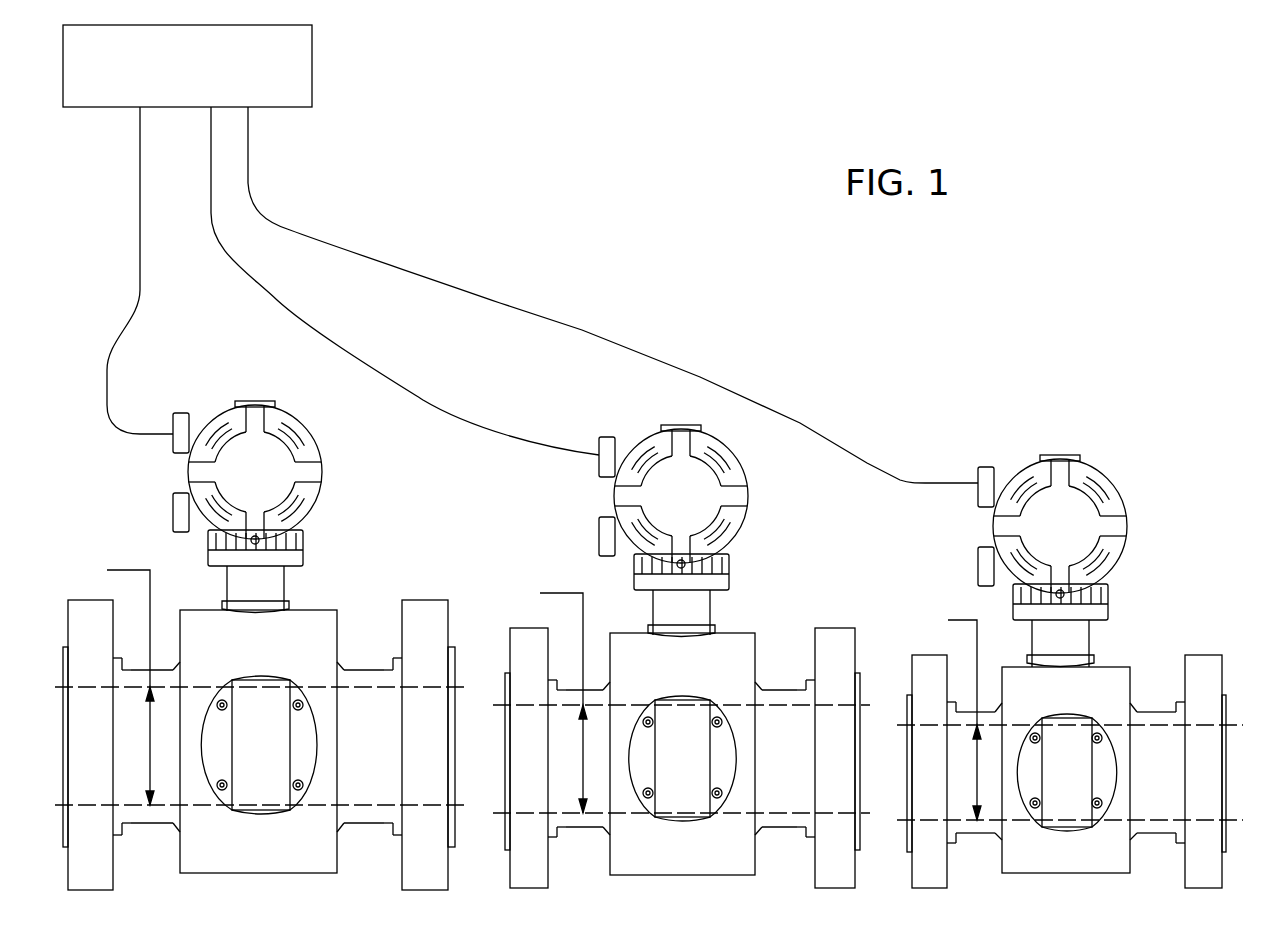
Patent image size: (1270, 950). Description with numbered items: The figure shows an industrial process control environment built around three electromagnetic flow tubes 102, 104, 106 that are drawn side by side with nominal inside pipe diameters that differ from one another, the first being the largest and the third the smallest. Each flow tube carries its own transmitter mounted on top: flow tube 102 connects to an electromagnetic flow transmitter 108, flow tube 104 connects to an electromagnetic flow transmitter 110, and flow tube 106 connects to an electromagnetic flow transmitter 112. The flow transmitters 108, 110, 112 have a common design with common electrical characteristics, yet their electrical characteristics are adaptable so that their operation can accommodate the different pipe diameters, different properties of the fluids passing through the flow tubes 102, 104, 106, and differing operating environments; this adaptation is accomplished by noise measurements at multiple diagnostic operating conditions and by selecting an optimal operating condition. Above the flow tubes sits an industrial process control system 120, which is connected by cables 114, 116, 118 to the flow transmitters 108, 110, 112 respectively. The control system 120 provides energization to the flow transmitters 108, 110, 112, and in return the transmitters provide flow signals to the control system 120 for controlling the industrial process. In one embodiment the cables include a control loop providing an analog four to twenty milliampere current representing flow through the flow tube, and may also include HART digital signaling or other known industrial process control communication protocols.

The electromagnetic flow tube 102 is at (410, 600).
The electromagnetic flow tube 104 is at (825, 627).
The electromagnetic flow tube 106 is at (1192, 655).
The electromagnetic flow transmitter 108 is at (322, 460).
The electromagnetic flow transmitter 110 is at (750, 488).
The electromagnetic flow transmitter 112 is at (1025, 462).
The cable 114 is at (118, 350).
The cable 116 is at (377, 372).
The cable 118 is at (582, 330).
The industrial process control system 120 is at (312, 72).